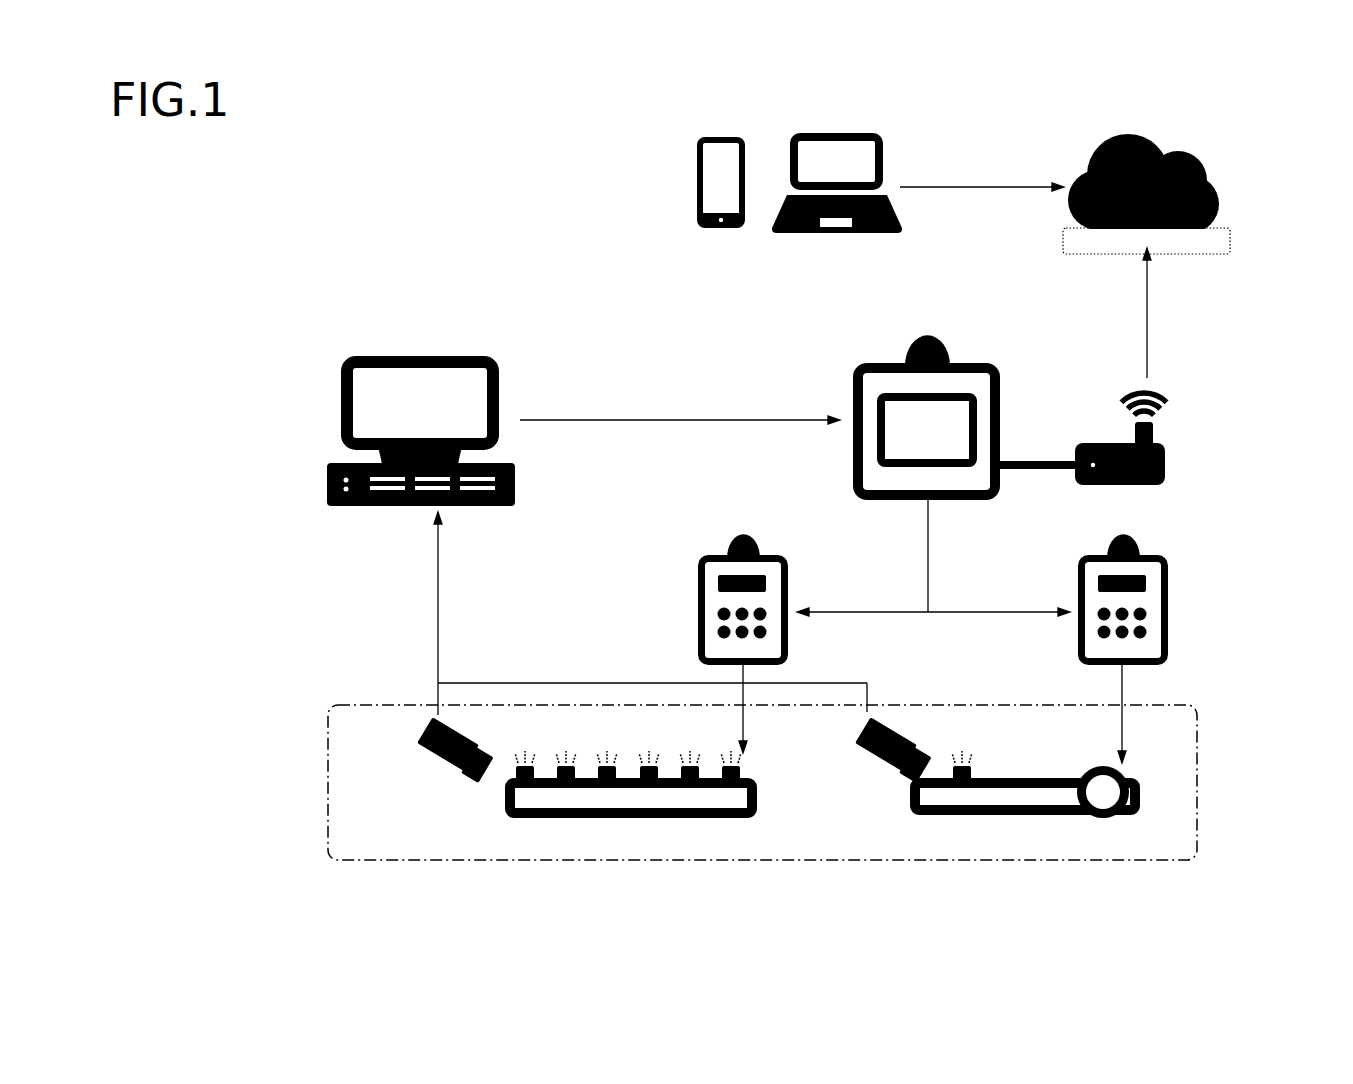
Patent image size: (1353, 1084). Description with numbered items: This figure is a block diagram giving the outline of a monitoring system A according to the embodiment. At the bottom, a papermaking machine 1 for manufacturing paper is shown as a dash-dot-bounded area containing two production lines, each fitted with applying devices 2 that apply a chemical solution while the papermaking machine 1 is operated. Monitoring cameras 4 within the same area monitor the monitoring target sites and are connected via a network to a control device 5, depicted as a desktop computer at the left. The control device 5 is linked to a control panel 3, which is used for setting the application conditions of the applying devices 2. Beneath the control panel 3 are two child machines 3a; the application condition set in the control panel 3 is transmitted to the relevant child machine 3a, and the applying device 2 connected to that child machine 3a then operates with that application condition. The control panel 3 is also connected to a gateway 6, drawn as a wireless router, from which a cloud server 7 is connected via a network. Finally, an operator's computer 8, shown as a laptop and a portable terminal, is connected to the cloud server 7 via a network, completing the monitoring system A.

The papermaking machine 1 is at (1203, 720).
The applying device 2 is at (630, 818).
The control panel 3 is at (983, 368).
The child machine 3a is at (697, 610).
The monitoring camera 4 is at (432, 758).
The control device 5 is at (338, 403).
The gateway 6 is at (1168, 463).
The cloud server 7 is at (1205, 183).
The operator's computer 8 is at (862, 133).
The monitoring system A is at (1238, 360).